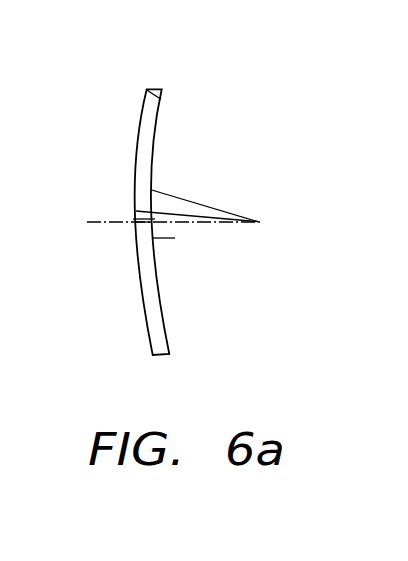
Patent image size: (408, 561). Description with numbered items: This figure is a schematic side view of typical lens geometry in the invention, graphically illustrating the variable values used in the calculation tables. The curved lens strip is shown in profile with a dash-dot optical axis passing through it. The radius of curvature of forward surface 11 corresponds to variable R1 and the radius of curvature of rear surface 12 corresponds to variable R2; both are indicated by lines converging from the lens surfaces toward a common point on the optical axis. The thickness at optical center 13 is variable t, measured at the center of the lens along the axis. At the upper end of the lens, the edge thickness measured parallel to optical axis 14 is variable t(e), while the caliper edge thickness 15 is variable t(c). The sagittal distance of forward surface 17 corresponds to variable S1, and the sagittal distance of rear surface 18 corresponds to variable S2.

The radius of curvature of forward surface 11 is at (167, 213).
The radius of curvature of rear surface 12 is at (228, 213).
The thickness at optical center 13 is at (141, 226).
The edge thickness measured parallel to optical axis 14 is at (160, 89).
The caliper edge thickness 15 is at (146, 101).
The sagittal distance of forward surface 17 is at (136, 215).
The sagittal distance of rear surface 18 is at (170, 239).